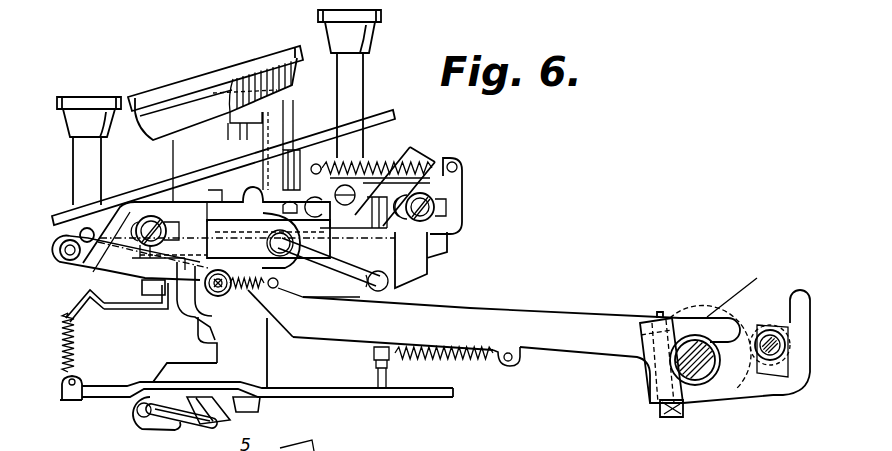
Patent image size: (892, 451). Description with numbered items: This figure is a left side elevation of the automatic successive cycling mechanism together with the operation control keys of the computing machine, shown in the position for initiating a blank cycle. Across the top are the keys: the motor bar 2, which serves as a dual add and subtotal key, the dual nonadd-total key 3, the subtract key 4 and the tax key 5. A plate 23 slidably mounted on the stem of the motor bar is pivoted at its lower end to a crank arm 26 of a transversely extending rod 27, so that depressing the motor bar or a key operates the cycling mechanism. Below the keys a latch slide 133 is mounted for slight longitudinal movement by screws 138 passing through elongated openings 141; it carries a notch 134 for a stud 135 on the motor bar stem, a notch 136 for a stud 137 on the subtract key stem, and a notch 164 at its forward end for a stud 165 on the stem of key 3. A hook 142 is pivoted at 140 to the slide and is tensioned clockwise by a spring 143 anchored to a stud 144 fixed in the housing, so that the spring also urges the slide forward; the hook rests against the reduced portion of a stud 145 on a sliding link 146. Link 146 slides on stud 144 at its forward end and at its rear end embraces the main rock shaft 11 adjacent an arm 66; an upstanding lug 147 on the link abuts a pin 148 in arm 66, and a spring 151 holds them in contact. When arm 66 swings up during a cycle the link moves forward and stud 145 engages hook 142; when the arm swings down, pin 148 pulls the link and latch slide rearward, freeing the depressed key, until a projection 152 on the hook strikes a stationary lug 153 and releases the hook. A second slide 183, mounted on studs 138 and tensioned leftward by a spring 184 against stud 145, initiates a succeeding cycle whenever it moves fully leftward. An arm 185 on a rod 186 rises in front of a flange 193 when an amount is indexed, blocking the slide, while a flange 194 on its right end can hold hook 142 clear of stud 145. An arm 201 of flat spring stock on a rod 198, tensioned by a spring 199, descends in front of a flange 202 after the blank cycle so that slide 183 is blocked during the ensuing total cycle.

The motor bar 2 is at (183, 95).
The dual nonadd-total key 3 is at (90, 108).
The subtract key 4 is at (357, 72).
The tax key 5 is at (240, 108).
The main rock shaft 11 is at (685, 335).
The plate 23 is at (260, 362).
The crank arm 26 is at (194, 421).
The transversely extending rod 27 is at (215, 413).
The arm 66 is at (745, 297).
The latch slide 133 is at (424, 148).
The notch 134 is at (276, 206).
The stud 135 is at (250, 232).
The notch 136 is at (355, 192).
The stud 137 is at (346, 168).
The screws 138 is at (145, 222).
The pivot 140 is at (278, 290).
The elongated openings 141 is at (158, 220).
The hook 142 is at (372, 268).
The spring 143 is at (250, 297).
The stud 144 is at (220, 300).
The stud 145 is at (395, 287).
The sliding link 146 is at (570, 313).
The upstanding lug 147 is at (816, 313).
The pin 148 is at (770, 338).
The spring 151 is at (472, 352).
The projection 152 is at (307, 260).
The stationary lug 153 is at (313, 147).
The notch 164 is at (93, 278).
The stud 165 is at (85, 228).
The slide 183 is at (347, 240).
The spring 184 is at (450, 160).
The arm 185 is at (152, 308).
The rod 186 is at (63, 258).
The flange 193 is at (208, 192).
The flange 194 is at (433, 258).
The rod 198 is at (76, 345).
The spring 199 is at (64, 372).
The arm 201 is at (130, 303).
The flange 202 is at (192, 326).